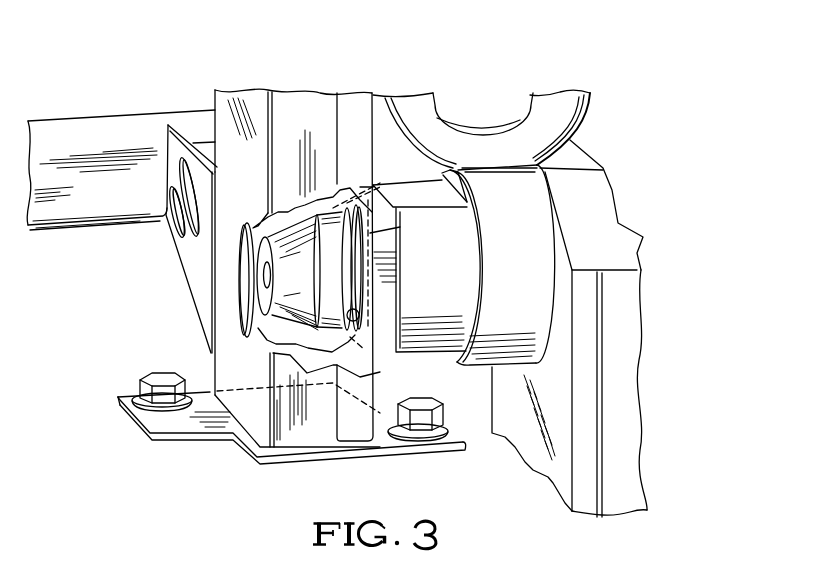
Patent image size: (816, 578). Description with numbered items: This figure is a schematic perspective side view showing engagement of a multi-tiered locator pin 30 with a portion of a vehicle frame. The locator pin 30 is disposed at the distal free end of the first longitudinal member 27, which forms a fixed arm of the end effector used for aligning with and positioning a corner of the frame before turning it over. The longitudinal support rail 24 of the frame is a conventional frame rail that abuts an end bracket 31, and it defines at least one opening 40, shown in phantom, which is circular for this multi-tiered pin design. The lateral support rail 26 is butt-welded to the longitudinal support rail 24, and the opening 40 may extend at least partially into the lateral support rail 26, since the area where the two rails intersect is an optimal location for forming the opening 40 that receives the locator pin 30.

The longitudinal support rail 24 is at (310, 90).
The lateral support rail 26 is at (124, 127).
The first longitudinal member 27 is at (600, 253).
The locator pin 30 is at (521, 240).
The end bracket 31 is at (173, 423).
The opening 40 is at (247, 295).